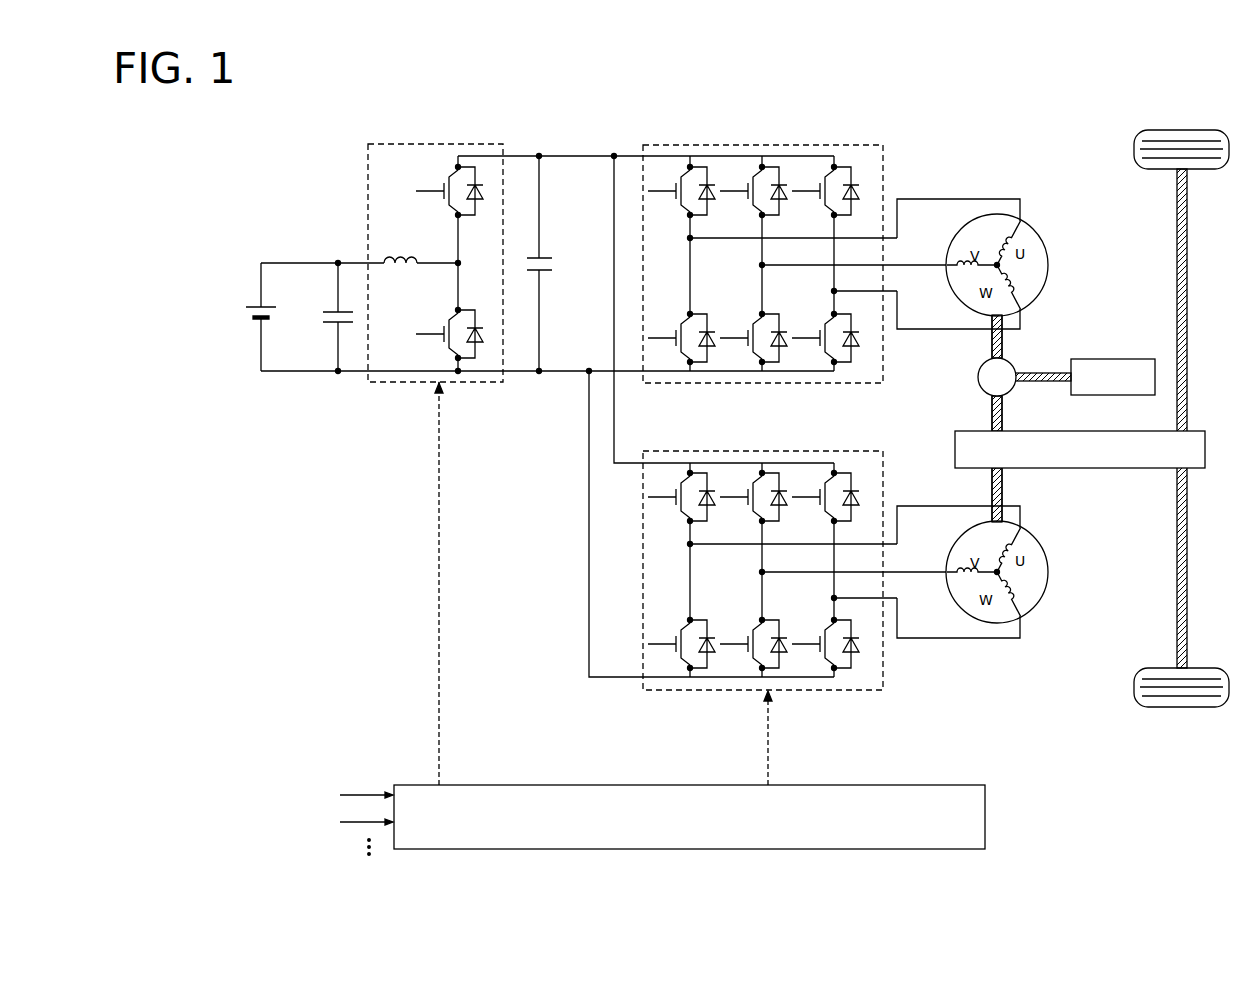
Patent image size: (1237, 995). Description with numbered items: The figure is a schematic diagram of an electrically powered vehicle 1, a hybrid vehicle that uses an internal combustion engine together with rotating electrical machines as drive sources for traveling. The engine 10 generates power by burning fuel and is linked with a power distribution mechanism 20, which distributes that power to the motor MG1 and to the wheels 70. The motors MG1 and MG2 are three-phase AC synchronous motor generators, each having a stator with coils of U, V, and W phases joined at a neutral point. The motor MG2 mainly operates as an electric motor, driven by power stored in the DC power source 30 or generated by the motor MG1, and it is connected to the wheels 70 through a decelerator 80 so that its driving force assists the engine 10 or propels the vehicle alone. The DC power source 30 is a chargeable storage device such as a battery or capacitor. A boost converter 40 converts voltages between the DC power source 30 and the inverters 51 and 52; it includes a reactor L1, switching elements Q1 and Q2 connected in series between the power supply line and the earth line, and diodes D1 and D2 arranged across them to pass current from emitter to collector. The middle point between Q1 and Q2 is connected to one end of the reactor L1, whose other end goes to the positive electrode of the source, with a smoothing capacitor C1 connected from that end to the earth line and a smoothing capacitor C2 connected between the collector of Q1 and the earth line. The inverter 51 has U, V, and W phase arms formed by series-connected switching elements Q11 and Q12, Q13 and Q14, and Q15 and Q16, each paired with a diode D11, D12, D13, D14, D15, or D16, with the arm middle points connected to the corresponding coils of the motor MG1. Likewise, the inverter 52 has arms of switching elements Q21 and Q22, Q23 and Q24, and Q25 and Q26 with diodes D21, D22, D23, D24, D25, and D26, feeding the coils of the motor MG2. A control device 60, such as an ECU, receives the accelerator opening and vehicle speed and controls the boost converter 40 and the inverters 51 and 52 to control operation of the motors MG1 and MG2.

The electrically powered vehicle 1 is at (597, 79).
The engine 10 is at (1109, 358).
The power distribution mechanism 20 is at (978, 377).
The DC power source 30 is at (256, 307).
The boost converter 40 is at (601, 236).
The inverter 51 is at (794, 240).
The inverter 52 is at (794, 546).
The control device 60 is at (985, 823).
The wheels 70 is at (1183, 130).
The decelerator 80 is at (1135, 469).
The motor MG1 is at (1035, 230).
The motor MG2 is at (1035, 537).
The smoothing capacitor C1 is at (329, 317).
The smoothing capacitor C2 is at (531, 263).
The reactor L1 is at (400, 251).
The switching element Q1 is at (436, 191).
The switching element Q2 is at (436, 334).
The diode D1 is at (478, 191).
The diode D2 is at (478, 335).
The switching element Q11 is at (669, 191).
The switching element Q12 is at (669, 342).
The switching element Q13 is at (742, 191).
The switching element Q14 is at (742, 342).
The switching element Q15 is at (814, 191).
The switching element Q16 is at (814, 342).
The diode D11 is at (713, 190).
The diode D12 is at (714, 336).
The diode D13 is at (785, 190).
The diode D14 is at (785, 336).
The diode D15 is at (855, 186).
The diode D16 is at (858, 337).
The switching element Q21 is at (669, 500).
The switching element Q22 is at (669, 648).
The switching element Q23 is at (742, 500).
The switching element Q24 is at (742, 648).
The switching element Q25 is at (814, 500).
The switching element Q26 is at (814, 648).
The diode D21 is at (713, 496).
The diode D22 is at (714, 643).
The diode D23 is at (785, 496).
The diode D24 is at (785, 643).
The diode D25 is at (855, 490).
The diode D26 is at (858, 639).